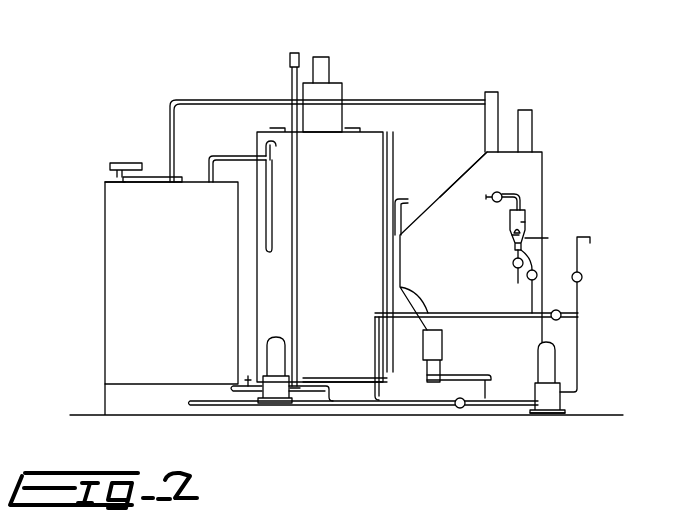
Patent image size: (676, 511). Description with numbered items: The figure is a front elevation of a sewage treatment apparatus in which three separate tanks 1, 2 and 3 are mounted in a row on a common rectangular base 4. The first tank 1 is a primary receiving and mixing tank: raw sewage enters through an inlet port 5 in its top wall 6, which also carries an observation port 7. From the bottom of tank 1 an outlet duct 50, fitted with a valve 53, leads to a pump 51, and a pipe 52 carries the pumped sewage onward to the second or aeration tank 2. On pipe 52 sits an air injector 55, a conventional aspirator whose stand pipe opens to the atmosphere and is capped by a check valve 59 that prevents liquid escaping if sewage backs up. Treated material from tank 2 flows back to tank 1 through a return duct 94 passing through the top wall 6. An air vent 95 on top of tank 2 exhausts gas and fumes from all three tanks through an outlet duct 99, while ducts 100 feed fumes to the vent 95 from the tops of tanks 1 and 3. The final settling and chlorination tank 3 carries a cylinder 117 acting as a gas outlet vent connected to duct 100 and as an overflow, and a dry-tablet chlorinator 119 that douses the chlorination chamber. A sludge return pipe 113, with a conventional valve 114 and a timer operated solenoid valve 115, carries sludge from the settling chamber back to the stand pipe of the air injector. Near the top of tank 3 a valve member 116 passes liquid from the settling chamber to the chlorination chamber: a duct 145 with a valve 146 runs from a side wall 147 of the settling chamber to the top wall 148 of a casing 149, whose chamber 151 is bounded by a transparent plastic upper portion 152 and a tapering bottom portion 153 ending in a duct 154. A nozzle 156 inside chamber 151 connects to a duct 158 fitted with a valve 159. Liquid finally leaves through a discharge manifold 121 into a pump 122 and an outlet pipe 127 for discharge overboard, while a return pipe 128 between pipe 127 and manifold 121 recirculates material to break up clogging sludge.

The first tank 1 is at (103, 275).
The second or aeration tank 2 is at (395, 160).
The final settling and chlorination tank 3 is at (548, 153).
The base 4 is at (104, 400).
The inlet port 5 is at (120, 162).
The top wall 6 is at (108, 180).
The observation port 7 is at (155, 176).
The outlet duct 50 is at (236, 393).
The pump 51 is at (276, 395).
The pipe 52 is at (298, 396).
The valve 53 is at (246, 375).
The air injector 55 is at (331, 403).
The check valve 59 is at (296, 52).
The return duct 94 is at (236, 156).
The air vent 95 is at (346, 90).
The outlet duct 99 is at (326, 62).
The ducts 100 is at (220, 100).
The sludge return pipe 113 is at (323, 376).
The valve 114 is at (466, 374).
The timer operated solenoid valve 115 is at (443, 335).
The valve member 116 is at (508, 240).
The cylinder 117 is at (500, 96).
The chlorinator 119 is at (532, 116).
The discharge manifold 121 is at (522, 416).
The pump 122 is at (560, 401).
The outlet pipe 127 is at (581, 341).
The return pipe 128 is at (395, 292).
The duct 145 is at (486, 196).
The valve 146 is at (500, 191).
The side wall 147 is at (478, 176).
The top wall 148 is at (508, 215).
The casing 149 is at (552, 244).
The chamber 151 is at (515, 214).
The upper portion 152 is at (512, 229).
The bottom portion 153 is at (514, 260).
The duct 154 is at (526, 285).
The nozzle 156 is at (525, 222).
The duct 158 is at (548, 308).
The valve 159 is at (583, 276).